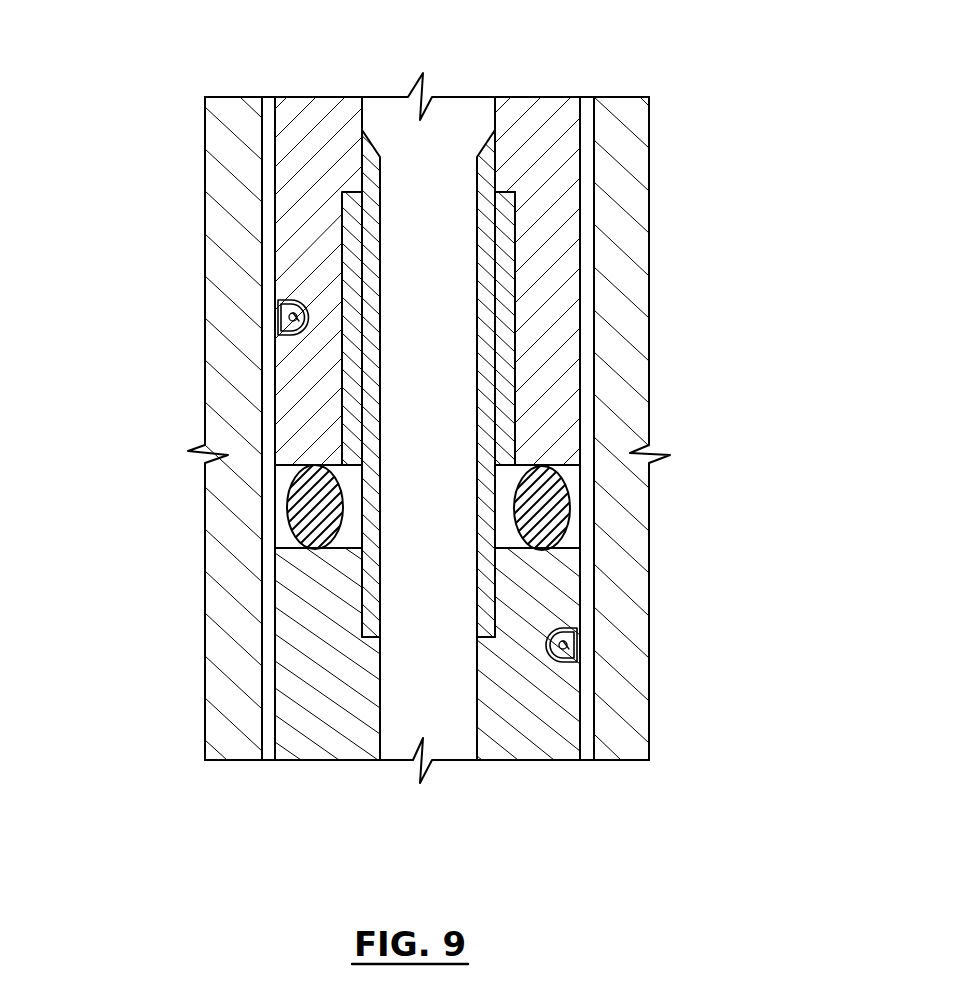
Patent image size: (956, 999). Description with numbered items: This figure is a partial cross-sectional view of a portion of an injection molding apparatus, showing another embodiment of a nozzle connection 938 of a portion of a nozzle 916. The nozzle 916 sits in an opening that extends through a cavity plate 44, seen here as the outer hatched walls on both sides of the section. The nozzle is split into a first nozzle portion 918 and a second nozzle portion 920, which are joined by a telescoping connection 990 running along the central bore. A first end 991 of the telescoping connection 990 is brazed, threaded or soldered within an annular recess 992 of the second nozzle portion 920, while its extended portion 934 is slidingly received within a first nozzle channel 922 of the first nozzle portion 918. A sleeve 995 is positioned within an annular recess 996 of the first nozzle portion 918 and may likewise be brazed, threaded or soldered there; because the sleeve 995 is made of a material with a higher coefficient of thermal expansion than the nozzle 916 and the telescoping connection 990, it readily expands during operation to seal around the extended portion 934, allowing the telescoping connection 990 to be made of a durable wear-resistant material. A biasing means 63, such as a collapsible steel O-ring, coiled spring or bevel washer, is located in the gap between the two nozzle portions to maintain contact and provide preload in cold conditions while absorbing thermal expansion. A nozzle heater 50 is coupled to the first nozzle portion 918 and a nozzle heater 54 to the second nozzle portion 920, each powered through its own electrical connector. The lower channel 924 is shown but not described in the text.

The cavity plate 44 is at (620, 402).
The nozzle heater 50 is at (277, 301).
The nozzle heater 54 is at (578, 653).
The biasing means 63 is at (548, 518).
The nozzle 916 is at (303, 226).
The first nozzle portion 918 is at (293, 408).
The second nozzle portion 920 is at (318, 640).
The first nozzle channel 922 is at (450, 118).
The lower bore 924 is at (445, 723).
The extended portion 934 is at (487, 238).
The nozzle connection 938 is at (345, 477).
The telescoping connection 990 is at (495, 371).
The first end 991 is at (497, 590).
The annular recess 992 is at (372, 625).
The sleeve 995 is at (516, 294).
The annular recess 996 is at (352, 207).